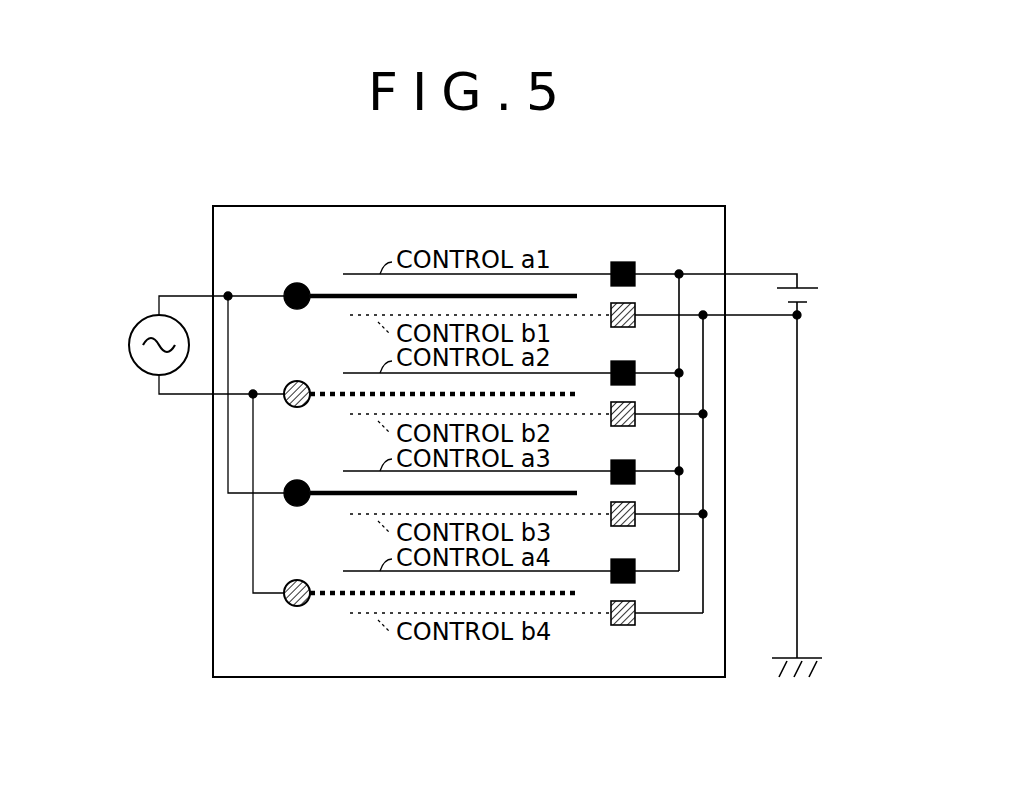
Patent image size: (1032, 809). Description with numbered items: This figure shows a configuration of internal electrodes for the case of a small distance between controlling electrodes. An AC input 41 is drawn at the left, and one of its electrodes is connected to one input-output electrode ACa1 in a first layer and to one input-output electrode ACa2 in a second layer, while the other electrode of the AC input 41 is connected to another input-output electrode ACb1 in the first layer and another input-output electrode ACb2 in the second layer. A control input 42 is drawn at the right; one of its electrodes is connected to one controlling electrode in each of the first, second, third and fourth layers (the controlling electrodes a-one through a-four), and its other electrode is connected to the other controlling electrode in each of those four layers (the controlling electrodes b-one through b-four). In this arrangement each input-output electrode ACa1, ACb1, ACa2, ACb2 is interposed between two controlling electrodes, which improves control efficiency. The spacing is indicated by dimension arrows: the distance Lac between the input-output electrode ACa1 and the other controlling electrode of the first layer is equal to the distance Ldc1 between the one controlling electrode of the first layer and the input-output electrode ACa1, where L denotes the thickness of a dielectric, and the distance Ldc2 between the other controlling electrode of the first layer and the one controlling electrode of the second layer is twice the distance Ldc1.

The AC input 41 is at (128, 347).
The control input 42 is at (816, 296).
The input-output electrode ACa1 is at (344, 292).
The input-output electrode ACb1 is at (326, 404).
The input-output electrode ACa2 is at (328, 496).
The input-output electrode ACb2 is at (326, 602).
The distance Lac is at (325, 268).
The distance Ldc1 is at (583, 312).
The distance Ldc2 is at (583, 318).